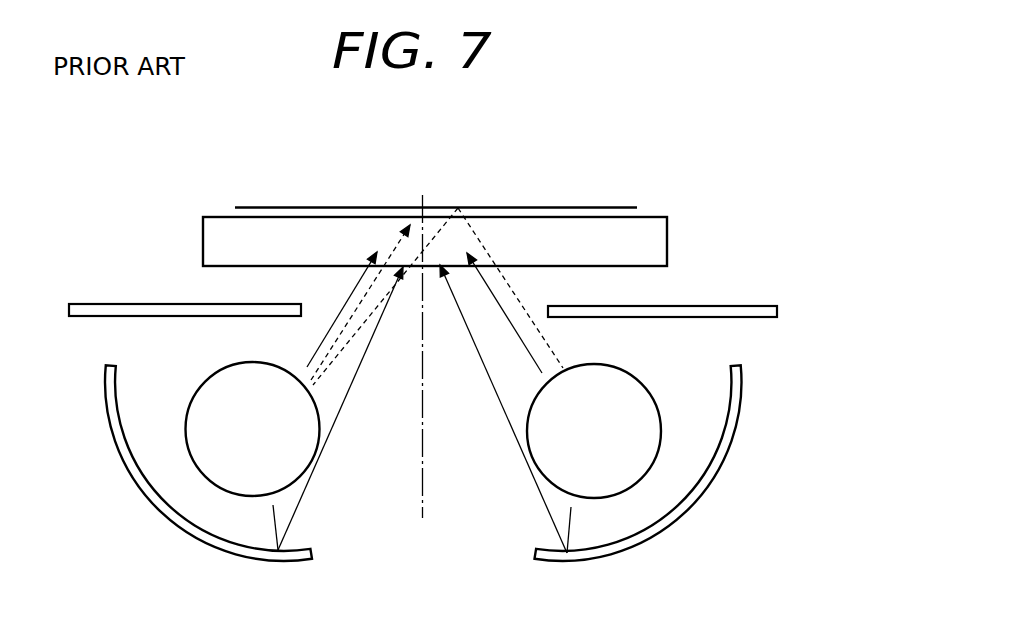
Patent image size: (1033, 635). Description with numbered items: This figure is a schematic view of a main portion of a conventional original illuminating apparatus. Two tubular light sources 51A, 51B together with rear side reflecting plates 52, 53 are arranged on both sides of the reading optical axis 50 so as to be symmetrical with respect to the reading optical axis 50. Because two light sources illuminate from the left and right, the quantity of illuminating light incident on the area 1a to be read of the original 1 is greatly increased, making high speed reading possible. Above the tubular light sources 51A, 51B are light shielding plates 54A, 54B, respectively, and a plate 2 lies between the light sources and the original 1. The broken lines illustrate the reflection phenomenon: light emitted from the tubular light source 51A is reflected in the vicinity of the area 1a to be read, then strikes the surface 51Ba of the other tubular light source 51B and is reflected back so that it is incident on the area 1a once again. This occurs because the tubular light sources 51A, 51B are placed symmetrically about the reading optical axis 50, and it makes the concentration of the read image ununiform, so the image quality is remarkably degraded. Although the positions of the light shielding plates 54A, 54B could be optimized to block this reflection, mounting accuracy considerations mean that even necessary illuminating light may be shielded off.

The original 1 is at (597, 207).
The area to be read 1a is at (428, 208).
The diffusion plate 2 is at (657, 233).
The reading optical axis 50 is at (422, 488).
The tubular light source 51A is at (638, 465).
The tubular light source 51B is at (207, 463).
The surface of tubular light source 51Ba is at (195, 393).
The rear side reflecting plate 52 is at (113, 422).
The rear side reflecting plate 53 is at (730, 425).
The light shielding plate 54A is at (727, 310).
The light shielding plate 54B is at (158, 302).